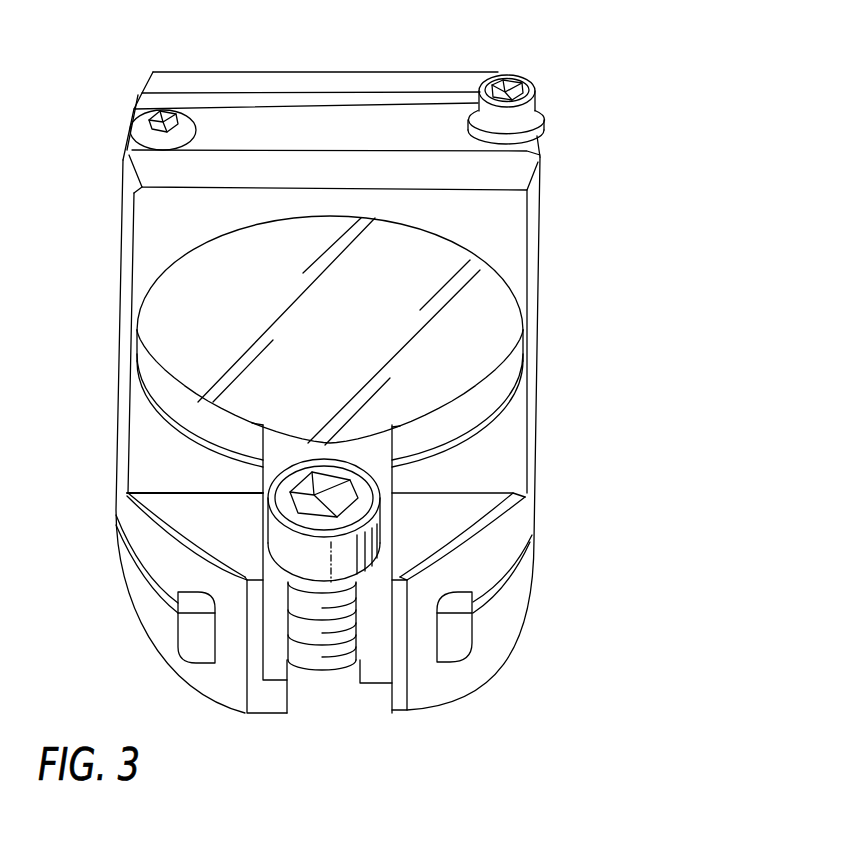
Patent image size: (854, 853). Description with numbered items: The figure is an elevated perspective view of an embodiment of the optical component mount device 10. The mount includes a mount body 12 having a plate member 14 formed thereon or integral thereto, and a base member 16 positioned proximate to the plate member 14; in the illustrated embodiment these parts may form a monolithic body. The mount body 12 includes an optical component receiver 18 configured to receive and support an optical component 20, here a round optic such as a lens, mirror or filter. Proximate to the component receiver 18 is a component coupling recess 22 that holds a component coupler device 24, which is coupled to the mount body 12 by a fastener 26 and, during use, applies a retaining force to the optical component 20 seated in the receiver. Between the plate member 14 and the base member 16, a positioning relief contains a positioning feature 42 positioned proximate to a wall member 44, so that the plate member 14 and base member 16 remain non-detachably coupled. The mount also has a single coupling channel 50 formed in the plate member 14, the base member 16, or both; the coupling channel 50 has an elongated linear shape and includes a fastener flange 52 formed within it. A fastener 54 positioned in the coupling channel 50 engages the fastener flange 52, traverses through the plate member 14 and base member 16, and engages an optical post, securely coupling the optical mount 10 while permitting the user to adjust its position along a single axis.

The optical component mount device 10 is at (603, 300).
The mount body 12 is at (494, 436).
The plate member 14 is at (143, 285).
The base member 16 is at (475, 665).
The optical component receiver 18 is at (490, 240).
The optical component 20 is at (243, 268).
The component coupling recess 22 is at (221, 98).
The component coupler device 24 is at (412, 125).
The fastener 26 is at (516, 76).
The positioning feature 42 is at (202, 628).
The wall member 44 is at (233, 605).
The coupling channel 50 is at (316, 690).
The fastener flange 52 is at (278, 596).
The fastener 54 is at (274, 534).